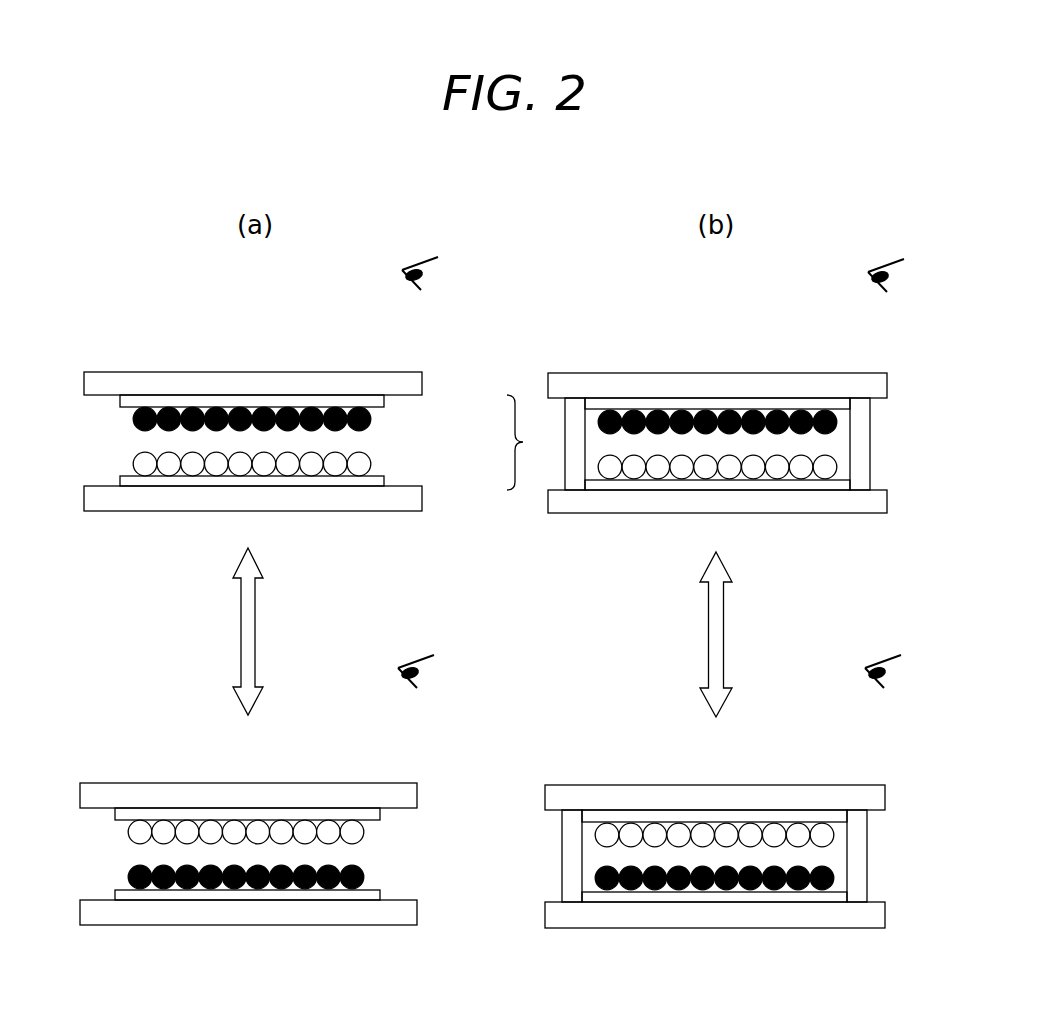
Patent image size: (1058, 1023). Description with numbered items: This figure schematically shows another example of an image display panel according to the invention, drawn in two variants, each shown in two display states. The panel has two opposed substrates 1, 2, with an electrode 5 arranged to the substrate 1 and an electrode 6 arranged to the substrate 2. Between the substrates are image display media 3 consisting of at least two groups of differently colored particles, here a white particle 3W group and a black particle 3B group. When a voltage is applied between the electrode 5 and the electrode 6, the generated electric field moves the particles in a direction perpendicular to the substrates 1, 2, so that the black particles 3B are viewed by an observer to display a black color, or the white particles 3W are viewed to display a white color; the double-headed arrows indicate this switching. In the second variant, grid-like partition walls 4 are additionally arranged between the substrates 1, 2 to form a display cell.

The substrate 1 is at (180, 502).
The substrate 2 is at (252, 385).
The image display media 3 is at (523, 442).
The black particle 3B is at (362, 420).
The white particle 3W is at (362, 462).
The partition wall 4 is at (865, 443).
The electrode 5 is at (338, 483).
The electrode 6 is at (340, 405).